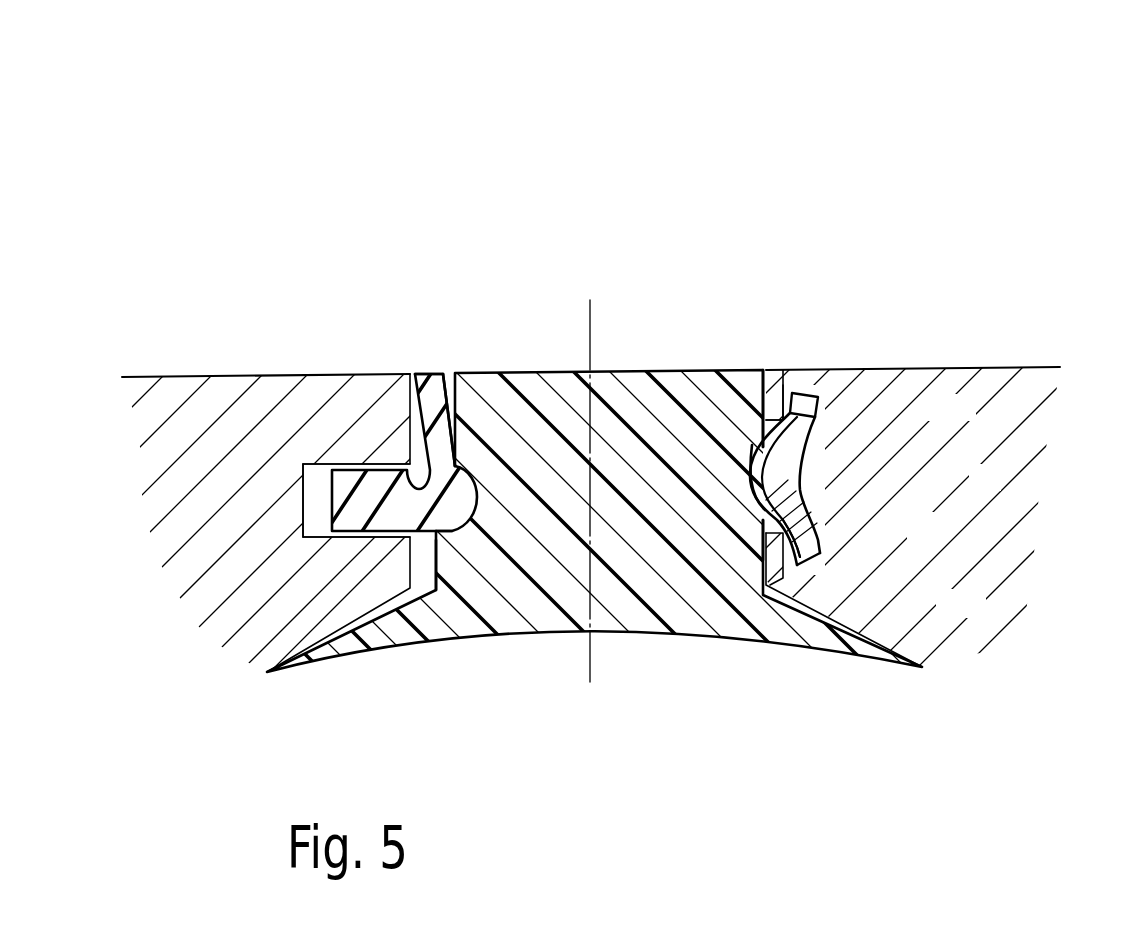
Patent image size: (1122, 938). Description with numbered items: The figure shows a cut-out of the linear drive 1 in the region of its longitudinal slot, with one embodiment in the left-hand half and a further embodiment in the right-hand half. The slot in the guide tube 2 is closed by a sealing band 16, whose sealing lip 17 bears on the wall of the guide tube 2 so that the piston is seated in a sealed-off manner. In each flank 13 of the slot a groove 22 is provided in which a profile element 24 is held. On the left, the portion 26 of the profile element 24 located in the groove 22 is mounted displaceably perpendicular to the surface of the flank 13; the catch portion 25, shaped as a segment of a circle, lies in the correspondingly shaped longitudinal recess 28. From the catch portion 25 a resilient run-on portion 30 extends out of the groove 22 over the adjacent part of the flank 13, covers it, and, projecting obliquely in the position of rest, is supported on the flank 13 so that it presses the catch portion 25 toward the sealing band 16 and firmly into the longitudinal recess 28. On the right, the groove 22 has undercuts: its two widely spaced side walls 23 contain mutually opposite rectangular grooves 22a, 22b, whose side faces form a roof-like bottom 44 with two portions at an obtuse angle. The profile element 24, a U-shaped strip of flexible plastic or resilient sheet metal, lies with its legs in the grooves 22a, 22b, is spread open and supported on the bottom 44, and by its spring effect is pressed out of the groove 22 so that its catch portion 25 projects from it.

The linear drive 1 is at (357, 151).
The guide tube 2 is at (215, 400).
The flank 13 is at (405, 412).
The sealing band 16 is at (500, 622).
The sealing lip 17 is at (730, 625).
The groove 22 is at (317, 463).
The groove 22a is at (820, 409).
The groove 22b is at (822, 547).
The side wall 23 is at (788, 392).
The profile element 24 is at (726, 430).
The catch portion 25 is at (599, 513).
The portion 26 is at (362, 485).
The longitudinal recess 28 is at (502, 530).
The run-on portion 30 is at (432, 390).
The bottom 44 is at (807, 508).